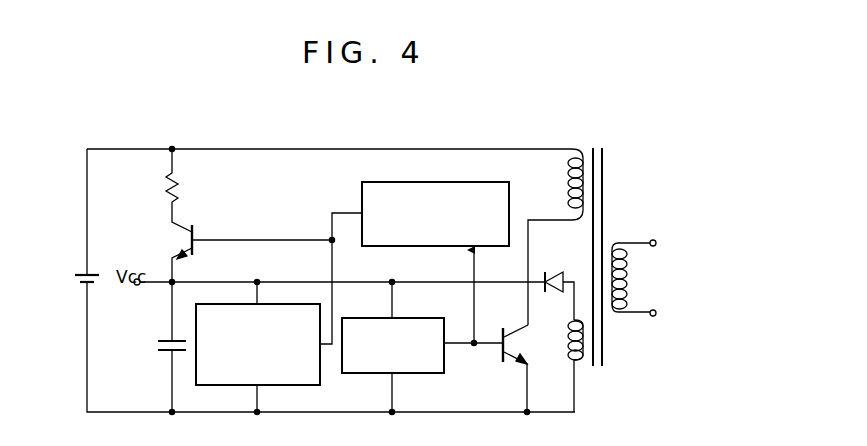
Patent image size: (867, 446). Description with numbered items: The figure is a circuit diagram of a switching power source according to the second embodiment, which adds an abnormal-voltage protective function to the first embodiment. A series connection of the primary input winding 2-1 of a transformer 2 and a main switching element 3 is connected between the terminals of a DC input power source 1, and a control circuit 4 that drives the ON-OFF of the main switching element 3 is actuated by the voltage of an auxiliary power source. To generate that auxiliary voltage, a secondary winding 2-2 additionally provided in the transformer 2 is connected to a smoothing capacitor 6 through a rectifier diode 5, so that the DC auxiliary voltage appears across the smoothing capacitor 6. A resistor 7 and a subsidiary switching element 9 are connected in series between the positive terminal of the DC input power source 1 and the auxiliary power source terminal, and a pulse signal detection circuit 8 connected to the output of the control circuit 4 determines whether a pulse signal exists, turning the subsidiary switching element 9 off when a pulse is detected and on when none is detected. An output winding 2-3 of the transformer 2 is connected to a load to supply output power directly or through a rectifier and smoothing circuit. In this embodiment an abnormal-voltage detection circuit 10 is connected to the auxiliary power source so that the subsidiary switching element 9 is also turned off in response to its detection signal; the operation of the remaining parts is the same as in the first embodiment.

The DC input power source 1 is at (70, 279).
The transformer 2 is at (598, 145).
The primary input winding 2-1 is at (583, 150).
The secondary winding 2-2 is at (580, 362).
The output winding 2-3 is at (625, 314).
The main switching element 3 is at (521, 340).
The control circuit 4 is at (446, 368).
The rectifier diode 5 is at (550, 268).
The smoothing capacitor 6 is at (157, 343).
The resistor 7 is at (180, 178).
The pulse signal detection circuit 8 is at (510, 195).
The subsidiary switching element 9 is at (196, 246).
The abnormal-voltage detection circuit 10 is at (321, 377).